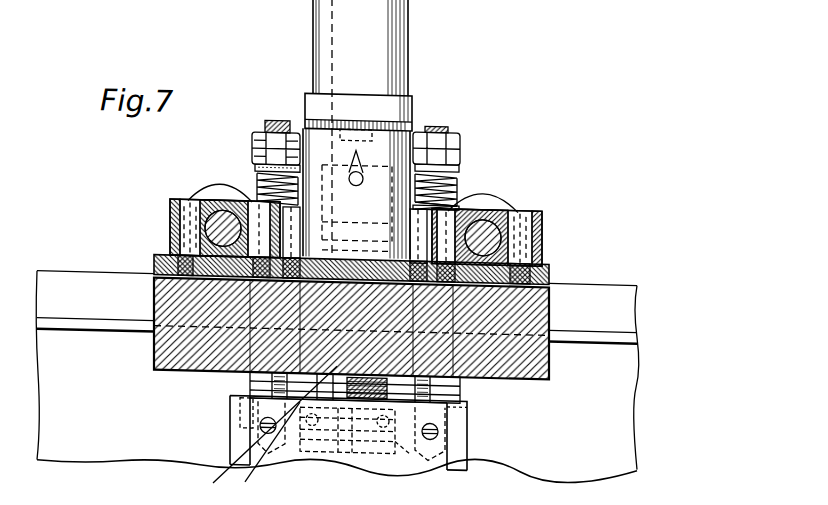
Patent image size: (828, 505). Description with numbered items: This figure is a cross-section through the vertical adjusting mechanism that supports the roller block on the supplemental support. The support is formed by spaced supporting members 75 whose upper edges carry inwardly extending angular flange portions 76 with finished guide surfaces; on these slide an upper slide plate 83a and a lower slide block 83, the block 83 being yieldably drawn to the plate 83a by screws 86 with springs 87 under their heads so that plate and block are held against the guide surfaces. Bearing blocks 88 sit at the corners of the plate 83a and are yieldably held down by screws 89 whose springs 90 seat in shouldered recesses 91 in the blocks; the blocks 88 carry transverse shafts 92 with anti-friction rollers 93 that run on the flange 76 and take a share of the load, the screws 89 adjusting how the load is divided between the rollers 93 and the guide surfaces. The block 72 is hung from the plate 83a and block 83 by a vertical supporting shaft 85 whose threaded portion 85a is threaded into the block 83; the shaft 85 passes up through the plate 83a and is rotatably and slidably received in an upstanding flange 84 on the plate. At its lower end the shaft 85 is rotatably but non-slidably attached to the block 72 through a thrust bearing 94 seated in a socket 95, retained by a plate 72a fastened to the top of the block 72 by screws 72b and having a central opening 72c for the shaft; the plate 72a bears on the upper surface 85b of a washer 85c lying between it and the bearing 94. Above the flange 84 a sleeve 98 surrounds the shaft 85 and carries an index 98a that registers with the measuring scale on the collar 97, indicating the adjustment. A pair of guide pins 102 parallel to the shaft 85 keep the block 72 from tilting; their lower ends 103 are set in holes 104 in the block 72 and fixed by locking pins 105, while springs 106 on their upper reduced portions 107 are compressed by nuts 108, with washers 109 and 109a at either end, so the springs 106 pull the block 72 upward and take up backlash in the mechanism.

The block 72 is at (230, 404).
The plate 72a is at (312, 396).
The screws 72b is at (468, 408).
The central opening 72c is at (266, 445).
The supporting members 75 is at (73, 342).
The angular flange portions 76 is at (627, 278).
The lower slide block 83 is at (537, 372).
The upper slide plate 83a is at (552, 266).
The flange 84 is at (343, 252).
The vertical supporting shaft 85 is at (410, 40).
The threaded portion 85a is at (248, 385).
The upper surface of washer 85b is at (377, 367).
The washer 85c is at (348, 452).
The screws 86 is at (296, 466).
The springs 87 is at (296, 481).
The bearing blocks 88 is at (197, 193).
The screws 89 is at (175, 209).
The springs 90 is at (172, 227).
The shouldered recesses 91 is at (172, 244).
The shafts 92 is at (225, 195).
The anti-friction rollers 93 is at (220, 192).
The thrust bearing 94 is at (383, 450).
The socket 95 is at (400, 446).
The collar 97 is at (409, 100).
The sleeve 98 is at (412, 126).
The index 98a is at (350, 128).
The guide pins 102 is at (475, 380).
The lower ends of guide pins 103 is at (240, 441).
The holes 104 is at (478, 470).
The locking pins 105 is at (262, 427).
The springs 106 is at (458, 189).
The upper reduced portions 107 is at (279, 122).
The nuts 108 is at (290, 135).
The washer 109 is at (258, 188).
The washer 109a is at (458, 175).